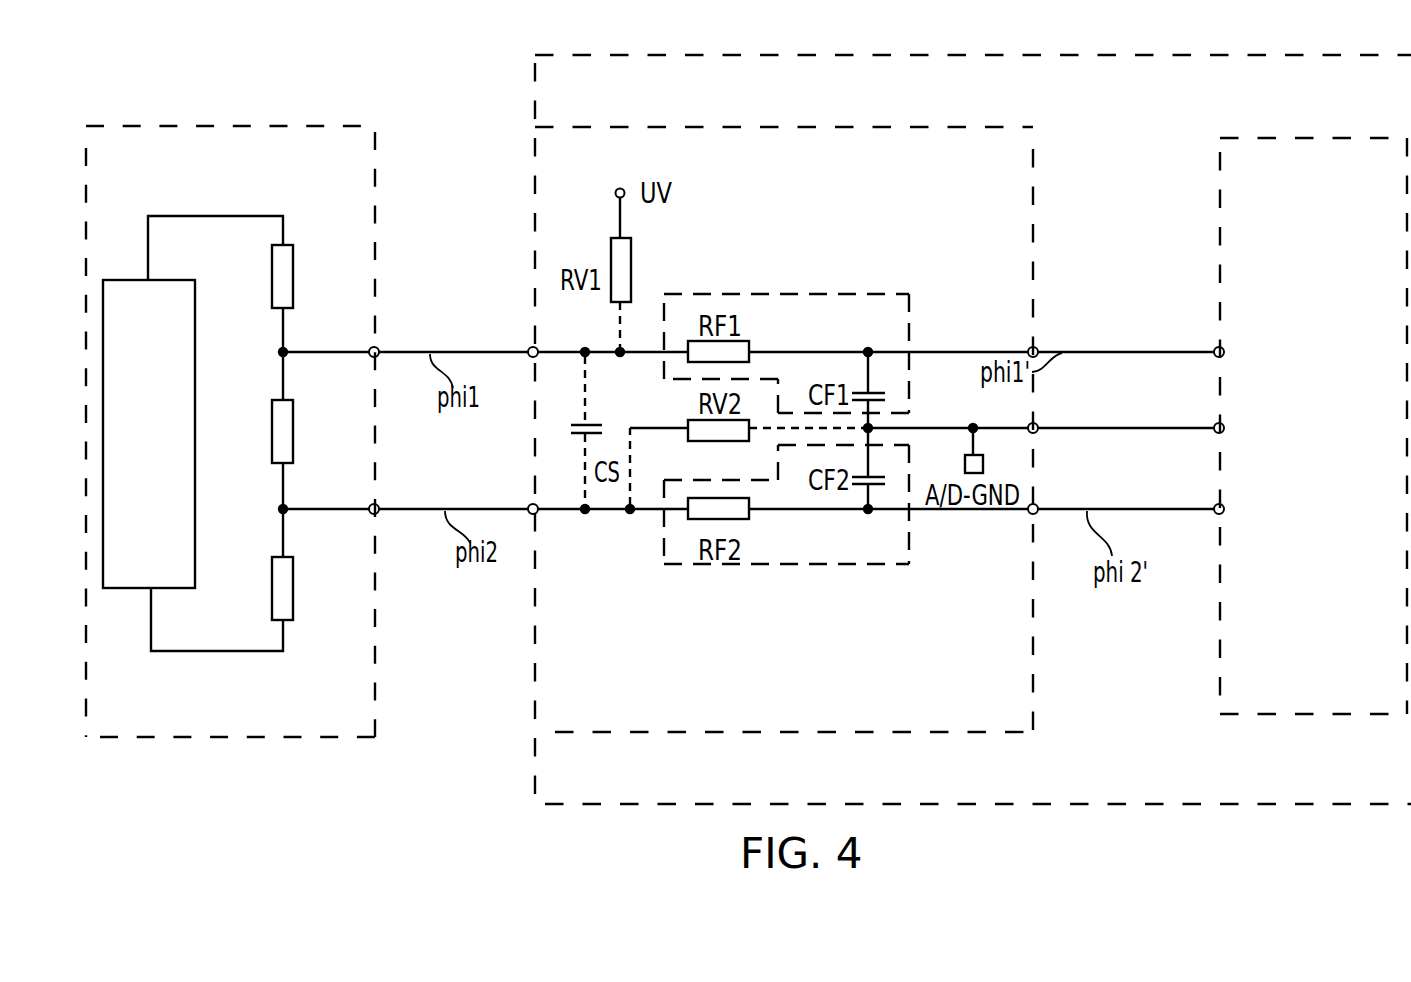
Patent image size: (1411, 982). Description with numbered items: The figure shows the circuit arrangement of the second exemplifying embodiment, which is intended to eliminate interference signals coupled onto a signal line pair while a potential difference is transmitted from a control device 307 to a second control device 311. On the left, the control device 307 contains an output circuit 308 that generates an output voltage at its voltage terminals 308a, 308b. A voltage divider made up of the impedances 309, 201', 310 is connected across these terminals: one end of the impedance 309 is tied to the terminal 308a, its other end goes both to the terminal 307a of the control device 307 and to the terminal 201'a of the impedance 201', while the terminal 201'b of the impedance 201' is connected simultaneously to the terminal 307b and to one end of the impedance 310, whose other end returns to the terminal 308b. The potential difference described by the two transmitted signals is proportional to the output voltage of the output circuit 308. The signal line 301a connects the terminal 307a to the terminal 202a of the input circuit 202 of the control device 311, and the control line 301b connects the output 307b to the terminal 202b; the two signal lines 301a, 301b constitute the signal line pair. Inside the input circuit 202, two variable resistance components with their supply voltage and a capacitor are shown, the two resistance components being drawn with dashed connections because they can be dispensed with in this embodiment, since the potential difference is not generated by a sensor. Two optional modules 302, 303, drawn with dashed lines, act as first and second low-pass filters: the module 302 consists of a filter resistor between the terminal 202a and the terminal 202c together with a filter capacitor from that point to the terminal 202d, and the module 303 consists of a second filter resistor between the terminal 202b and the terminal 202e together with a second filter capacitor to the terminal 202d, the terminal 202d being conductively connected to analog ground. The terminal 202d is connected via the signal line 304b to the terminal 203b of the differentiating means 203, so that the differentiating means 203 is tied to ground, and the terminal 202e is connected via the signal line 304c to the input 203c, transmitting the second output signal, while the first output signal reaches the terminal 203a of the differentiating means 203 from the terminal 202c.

The control device 311 is at (1290, 52).
The input circuit 202 is at (1033, 228).
The differentiating means 203 is at (1300, 138).
The control device 307 is at (345, 125).
The output circuit 308 is at (195, 365).
The terminal of output circuit 308a is at (148, 279).
The terminal of output circuit 308b is at (151, 590).
The impedance 309 is at (293, 288).
The impedance 201' is at (319, 431).
The impedance 310 is at (293, 592).
The terminal of impedance 201'a is at (316, 328).
The terminal of impedance 201'b is at (320, 488).
The terminal of control device 307a is at (376, 348).
The terminal of control device 307b is at (376, 505).
The signal line 301a is at (462, 351).
The signal line 301b is at (462, 508).
The terminal of input circuit 202a is at (531, 347).
The terminal of input circuit 202b is at (531, 504).
The module 302 is at (845, 293).
The module 303 is at (863, 566).
The terminal of input circuit 202c is at (1035, 348).
The terminal of input circuit 202d is at (1035, 425).
The terminal of input circuit 202e is at (1035, 506).
The signal line 304b is at (1092, 351).
The signal line 304c is at (1133, 508).
The terminal of differentiating means 203a is at (1217, 347).
The terminal of differentiating means 203b is at (1217, 424).
The input of differentiating means 203c is at (1217, 505).